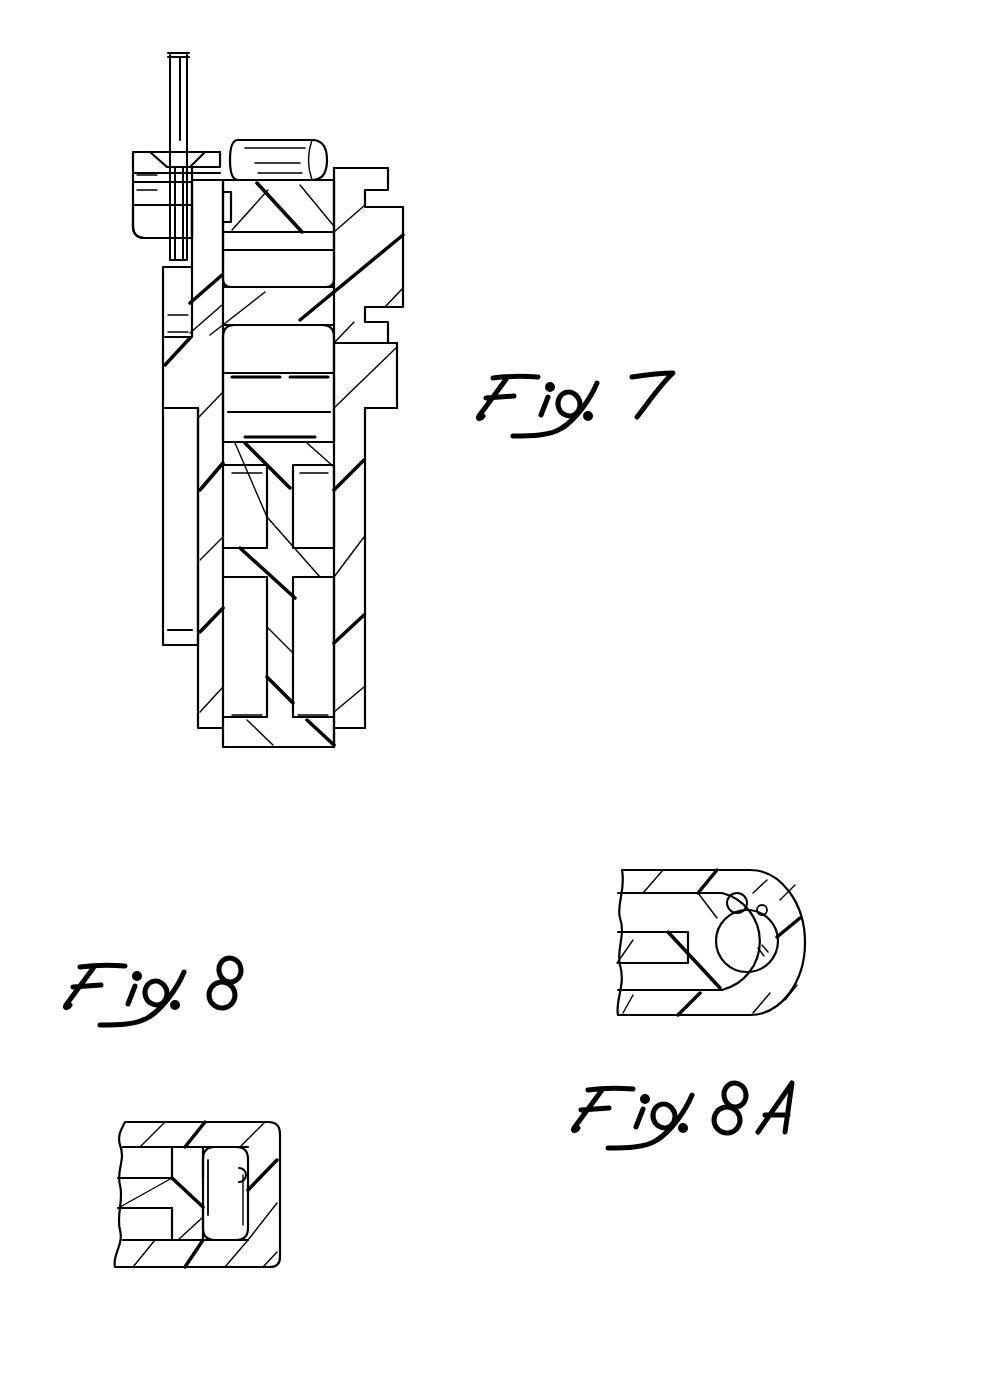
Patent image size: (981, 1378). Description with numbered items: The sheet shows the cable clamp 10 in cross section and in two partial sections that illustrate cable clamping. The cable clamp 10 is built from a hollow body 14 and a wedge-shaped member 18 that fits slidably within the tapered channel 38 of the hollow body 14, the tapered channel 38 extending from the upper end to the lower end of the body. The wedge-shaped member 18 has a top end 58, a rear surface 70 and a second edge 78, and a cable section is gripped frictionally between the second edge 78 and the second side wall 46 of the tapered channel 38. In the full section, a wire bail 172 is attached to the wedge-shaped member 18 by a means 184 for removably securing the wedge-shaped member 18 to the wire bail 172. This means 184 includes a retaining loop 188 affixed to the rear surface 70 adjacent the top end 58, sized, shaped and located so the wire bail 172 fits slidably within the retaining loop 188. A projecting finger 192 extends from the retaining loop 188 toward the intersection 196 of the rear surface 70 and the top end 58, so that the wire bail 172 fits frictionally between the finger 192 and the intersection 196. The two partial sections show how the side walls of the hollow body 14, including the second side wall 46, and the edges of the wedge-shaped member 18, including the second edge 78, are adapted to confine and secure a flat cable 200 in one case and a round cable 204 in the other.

In FIG. 7, the cable clamp 10 is at (430, 292).
In FIG. 7, the hollow body 14 is at (368, 513).
In FIG. 8, the hollow body 14 is at (267, 1268).
In FIG. 8A, the hollow body 14 is at (733, 1017).
In FIG. 7, the wedge-shaped member 18 is at (325, 182).
In FIG. 8, the wedge-shaped member 18 is at (185, 1163).
In FIG. 8A, the wedge-shaped member 18 is at (630, 940).
In FIG. 7, the tapered channel 38 is at (340, 730).
In FIG. 8, the second side wall 46 is at (247, 1180).
In FIG. 8A, the second side wall 46 is at (766, 906).
In FIG. 7, the top end 58 is at (233, 157).
In FIG. 7, the rear surface 70 is at (165, 262).
In FIG. 8, the second edge 78 is at (225, 1165).
In FIG. 8A, the second edge 78 is at (735, 896).
In FIG. 7, the wire bail 172 is at (184, 72).
In FIG. 7, the means for removably securing the wedge-shaped member to the wire bail 184 is at (172, 162).
In FIG. 7, the retaining loop 188 is at (150, 230).
In FIG. 7, the projecting finger 192 is at (220, 163).
In FIG. 7, the intersection of the rear surface and the top end 196 is at (157, 177).
In FIG. 8, the flat cable 200 is at (230, 1225).
In FIG. 8A, the round cable 204 is at (757, 953).